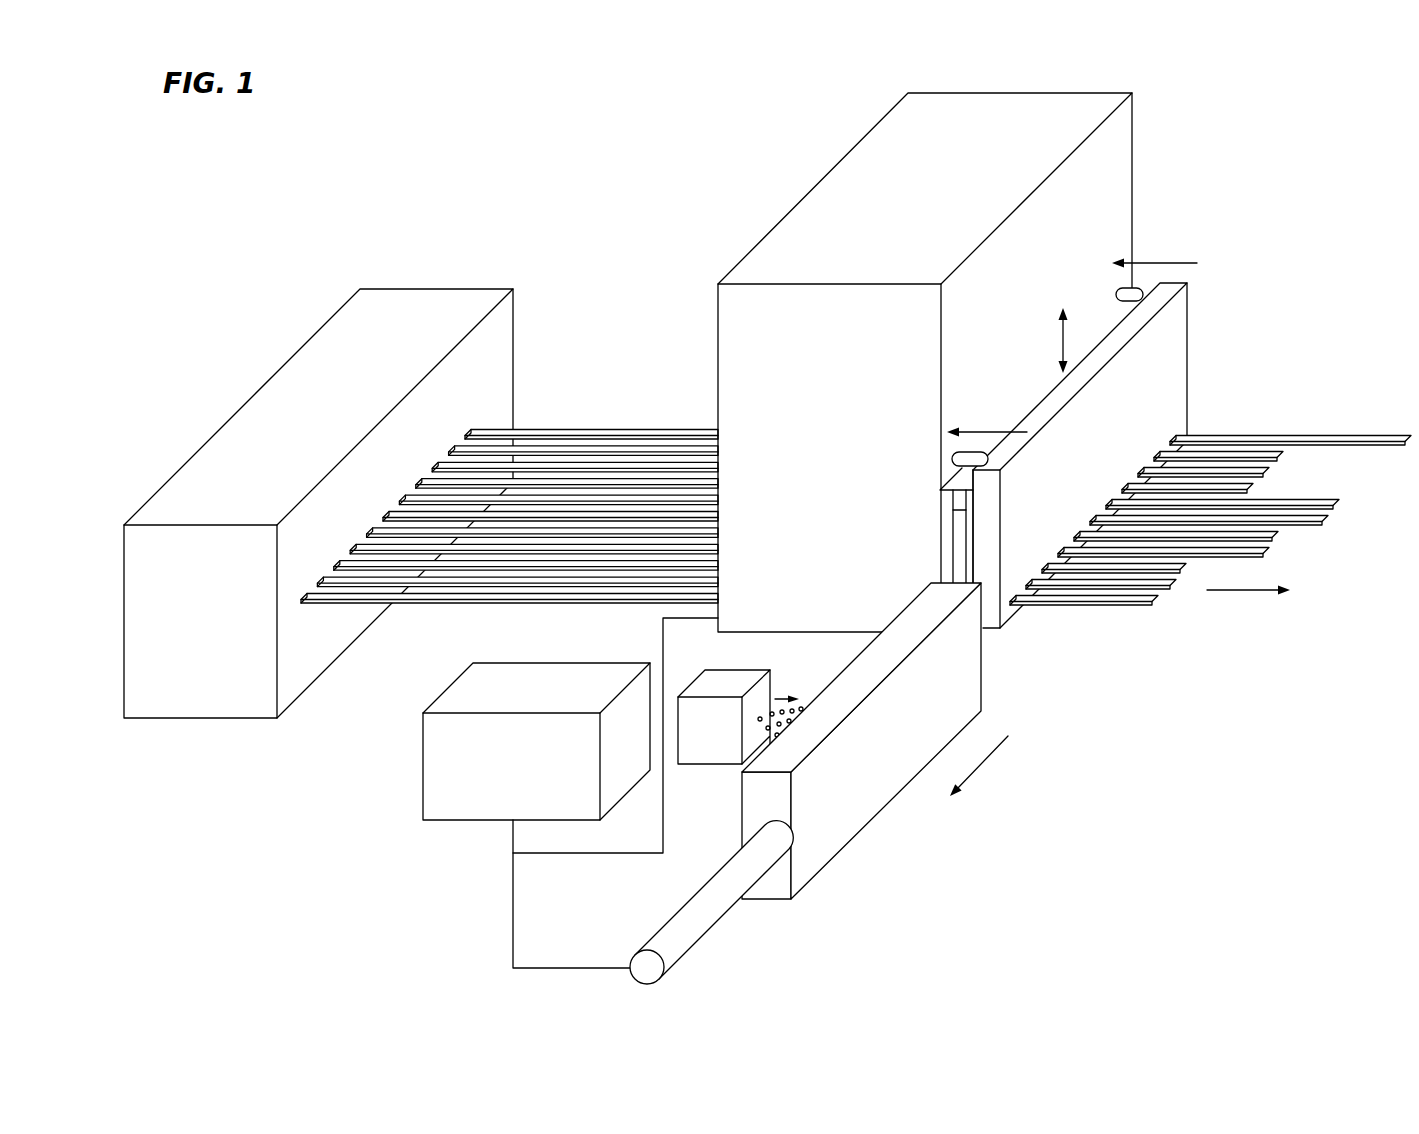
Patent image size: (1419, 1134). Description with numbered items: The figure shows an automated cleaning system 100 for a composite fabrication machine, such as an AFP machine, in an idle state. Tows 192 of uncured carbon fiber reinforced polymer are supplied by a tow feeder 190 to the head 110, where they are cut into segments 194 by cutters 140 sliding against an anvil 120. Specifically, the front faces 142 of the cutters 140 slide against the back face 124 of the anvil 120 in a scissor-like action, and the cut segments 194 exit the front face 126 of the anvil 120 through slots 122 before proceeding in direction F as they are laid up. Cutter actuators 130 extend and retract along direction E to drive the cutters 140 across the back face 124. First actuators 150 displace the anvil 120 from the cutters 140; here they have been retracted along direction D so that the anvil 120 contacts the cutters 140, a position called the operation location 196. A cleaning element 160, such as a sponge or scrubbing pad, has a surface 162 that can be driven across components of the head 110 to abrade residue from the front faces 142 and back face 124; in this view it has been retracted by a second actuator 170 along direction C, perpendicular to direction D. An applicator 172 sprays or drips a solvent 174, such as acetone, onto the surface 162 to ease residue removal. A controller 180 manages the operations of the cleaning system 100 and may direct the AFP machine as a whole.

The automated cleaning system 100 is at (610, 161).
The head 110 is at (1120, 142).
The anvil 120 is at (1180, 332).
The slots 122 is at (1176, 428).
The back face 124 is at (984, 489).
The front face 126 is at (1099, 419).
The cutter actuators 130 is at (960, 500).
The cutters 140 is at (958, 554).
The front faces 142 is at (978, 523).
The first actuators 150 is at (1119, 294).
The cleaning element 160 is at (860, 826).
The surface 162 is at (967, 673).
The second actuator 170 is at (680, 910).
The applicator 172 is at (728, 676).
The solvent 174 is at (802, 712).
The controller 180 is at (533, 797).
The tow feeder 190 is at (330, 345).
The tows 192 is at (552, 436).
The segments 194 is at (1340, 433).
The operation location 196 is at (1222, 260).